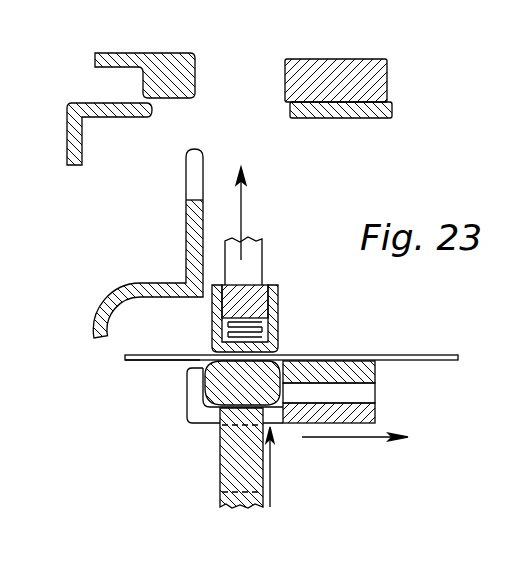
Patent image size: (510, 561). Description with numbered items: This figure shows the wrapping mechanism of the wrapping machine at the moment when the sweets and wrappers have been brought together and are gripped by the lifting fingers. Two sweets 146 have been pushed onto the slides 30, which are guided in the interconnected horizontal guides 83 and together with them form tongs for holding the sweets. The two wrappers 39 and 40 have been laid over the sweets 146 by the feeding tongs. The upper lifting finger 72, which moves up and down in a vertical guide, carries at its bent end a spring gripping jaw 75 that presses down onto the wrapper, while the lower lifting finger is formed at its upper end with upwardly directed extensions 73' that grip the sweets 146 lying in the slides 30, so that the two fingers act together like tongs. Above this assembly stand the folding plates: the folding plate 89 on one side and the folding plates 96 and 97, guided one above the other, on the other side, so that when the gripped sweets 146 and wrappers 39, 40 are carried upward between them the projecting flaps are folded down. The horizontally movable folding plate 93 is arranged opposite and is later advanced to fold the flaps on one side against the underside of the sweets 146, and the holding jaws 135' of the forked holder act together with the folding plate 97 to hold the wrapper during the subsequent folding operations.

The holding jaws 135' is at (148, 60).
The folding plate 93 is at (120, 117).
The folding plate 97 is at (345, 65).
The folding plate 96 is at (345, 116).
The folding plate 89 is at (187, 198).
The upper lifting finger 72 is at (255, 255).
The spring gripping jaw 75 is at (281, 300).
The horizontal guides 83 is at (319, 373).
The wrapper 40 is at (151, 355).
The wrapper 39 is at (143, 361).
The sweets 146 is at (203, 398).
The upwardly directed extensions 73' is at (224, 458).
The slides 30 is at (283, 415).